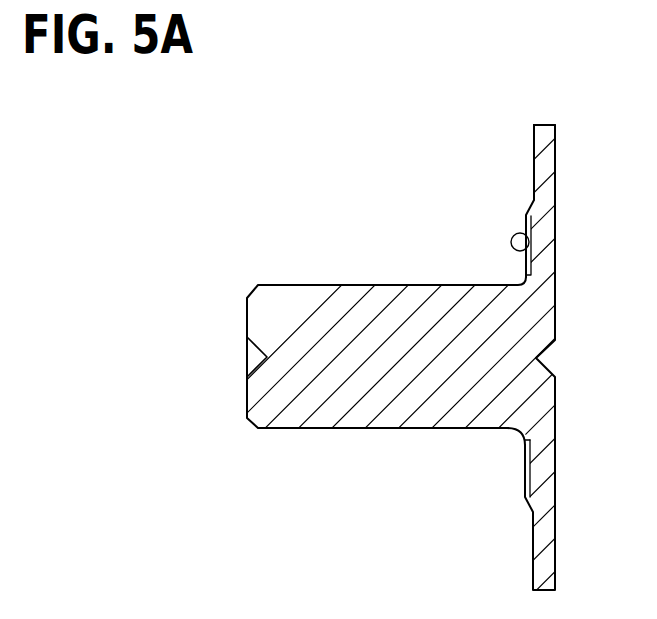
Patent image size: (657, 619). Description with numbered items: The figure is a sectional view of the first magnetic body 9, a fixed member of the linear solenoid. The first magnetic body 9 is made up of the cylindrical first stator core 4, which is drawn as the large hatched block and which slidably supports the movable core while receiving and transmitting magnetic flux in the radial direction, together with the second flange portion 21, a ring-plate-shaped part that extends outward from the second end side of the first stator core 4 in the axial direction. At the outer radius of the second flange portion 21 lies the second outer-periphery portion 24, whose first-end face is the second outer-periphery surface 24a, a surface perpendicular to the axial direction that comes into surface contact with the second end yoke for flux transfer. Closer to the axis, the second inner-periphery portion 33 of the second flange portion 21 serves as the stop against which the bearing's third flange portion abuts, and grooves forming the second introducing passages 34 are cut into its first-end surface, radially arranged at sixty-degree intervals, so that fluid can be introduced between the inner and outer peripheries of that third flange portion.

The first magnetic body 9 is at (306, 195).
The first stator core 4 is at (361, 412).
The second flange portion 21 is at (559, 146).
The second outer-periphery portion 24 is at (542, 165).
The second outer-periphery surface 24a is at (535, 143).
The second inner-periphery portion 33 is at (545, 261).
The second introducing passages 34 is at (528, 234).